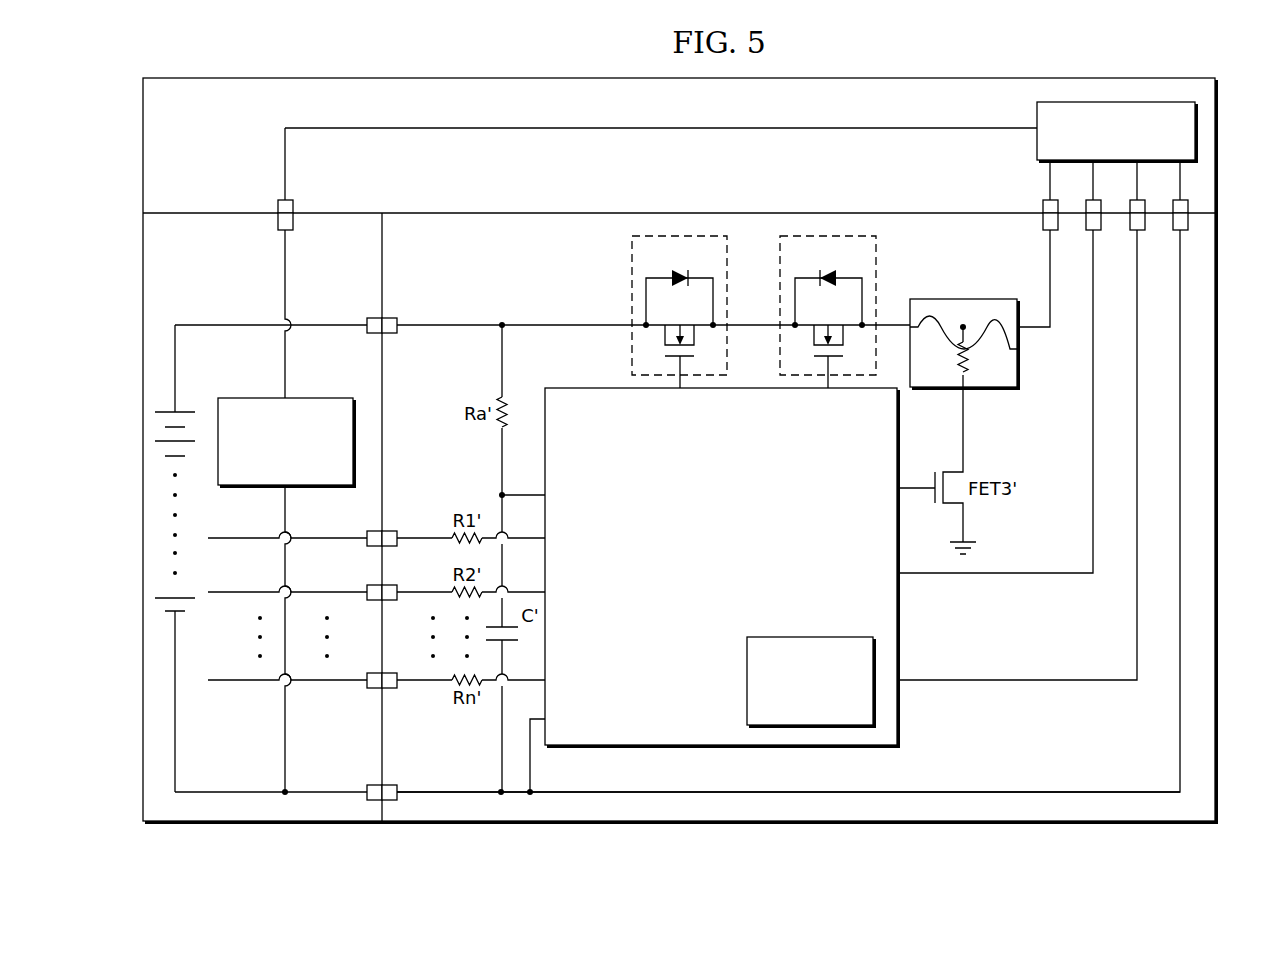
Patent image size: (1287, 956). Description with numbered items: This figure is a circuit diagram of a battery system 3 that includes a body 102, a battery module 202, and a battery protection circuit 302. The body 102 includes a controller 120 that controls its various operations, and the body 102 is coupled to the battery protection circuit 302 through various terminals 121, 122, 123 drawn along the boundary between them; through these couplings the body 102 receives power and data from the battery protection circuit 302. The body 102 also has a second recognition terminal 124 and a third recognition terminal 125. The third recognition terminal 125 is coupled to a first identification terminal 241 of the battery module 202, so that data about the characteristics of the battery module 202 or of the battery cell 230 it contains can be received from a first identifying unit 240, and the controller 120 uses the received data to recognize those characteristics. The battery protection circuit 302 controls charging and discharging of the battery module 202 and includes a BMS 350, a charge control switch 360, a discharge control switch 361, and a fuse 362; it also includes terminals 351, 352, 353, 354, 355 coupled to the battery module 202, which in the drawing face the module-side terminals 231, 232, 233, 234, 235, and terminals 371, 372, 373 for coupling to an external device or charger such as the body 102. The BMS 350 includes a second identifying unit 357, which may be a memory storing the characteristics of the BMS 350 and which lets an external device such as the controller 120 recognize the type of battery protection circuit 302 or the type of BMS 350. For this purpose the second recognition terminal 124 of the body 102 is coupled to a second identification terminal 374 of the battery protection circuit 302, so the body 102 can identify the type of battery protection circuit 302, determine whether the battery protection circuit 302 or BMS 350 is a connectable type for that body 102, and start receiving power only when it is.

The battery system 3 is at (1240, 130).
The body 102 is at (1218, 178).
The battery protection circuit 302 is at (1218, 563).
The controller 120 is at (1037, 118).
The host power terminal 121 is at (1043, 204).
The host terminal 122 is at (1173, 204).
The host communication terminal 123 is at (1086, 204).
The second recognition terminal 124 is at (1130, 204).
The third recognition terminal 125 is at (278, 203).
The battery module 202 is at (345, 213).
The battery cell 230 is at (182, 412).
The battery positive terminal 231 is at (367, 318).
The battery negative terminal 232 is at (367, 785).
The battery cell tap terminal 233 is at (367, 531).
The battery cell tap terminal 234 is at (367, 585).
The battery cell tap terminal 235 is at (367, 688).
The first identifying unit 240 is at (315, 398).
The first identification terminal 241 is at (278, 222).
The BMS 350 is at (755, 388).
The protection circuit positive terminal 351 is at (397, 318).
The protection circuit negative terminal 352 is at (397, 785).
The protection circuit cell tap terminal 353 is at (397, 531).
The protection circuit cell tap terminal 354 is at (397, 585).
The protection circuit cell tap terminal 355 is at (397, 688).
The second identifying unit 357 is at (812, 637).
The charge control switch 360 is at (631, 260).
The discharge control switch 361 is at (878, 260).
The fuse 362 is at (965, 299).
The pack power terminal 371 is at (1043, 226).
The pack terminal 372 is at (1173, 226).
The pack communication terminal 373 is at (1086, 226).
The second identification terminal 374 is at (1130, 226).